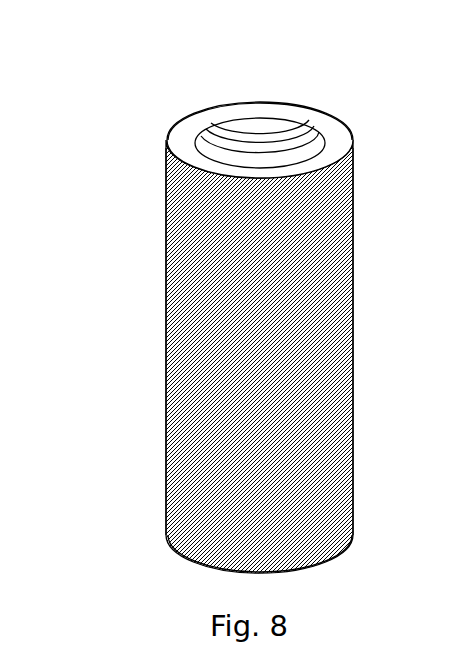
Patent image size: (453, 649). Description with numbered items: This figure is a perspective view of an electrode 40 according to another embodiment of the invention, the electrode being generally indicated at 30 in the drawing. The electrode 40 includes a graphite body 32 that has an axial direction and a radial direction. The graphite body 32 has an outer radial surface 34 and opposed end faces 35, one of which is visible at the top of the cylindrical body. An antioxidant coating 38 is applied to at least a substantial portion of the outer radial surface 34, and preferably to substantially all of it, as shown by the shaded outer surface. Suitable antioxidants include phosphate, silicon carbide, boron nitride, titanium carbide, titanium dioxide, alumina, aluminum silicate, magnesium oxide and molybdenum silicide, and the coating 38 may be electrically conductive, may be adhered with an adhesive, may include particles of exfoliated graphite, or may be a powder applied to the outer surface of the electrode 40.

The coupling 30 is at (128, 188).
The graphite body 32 is at (177, 257).
The outer radial surface 34 is at (200, 320).
The opposed end faces 35 is at (173, 125).
The antioxidant coating 38 is at (333, 210).
The electrode 40 is at (112, 98).